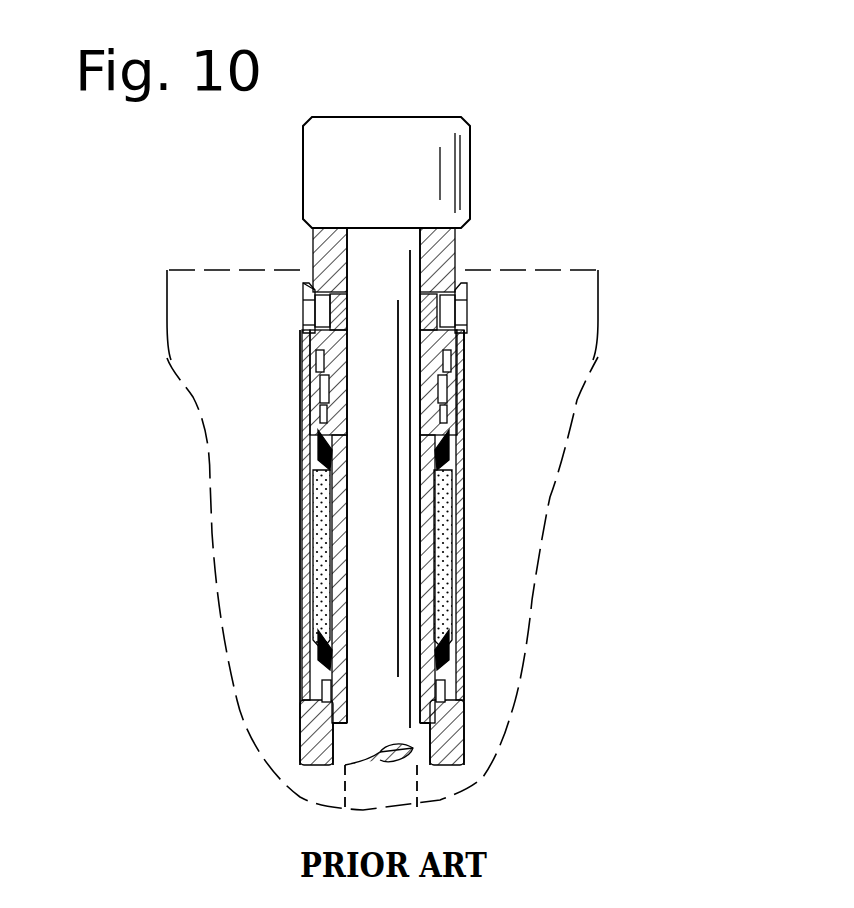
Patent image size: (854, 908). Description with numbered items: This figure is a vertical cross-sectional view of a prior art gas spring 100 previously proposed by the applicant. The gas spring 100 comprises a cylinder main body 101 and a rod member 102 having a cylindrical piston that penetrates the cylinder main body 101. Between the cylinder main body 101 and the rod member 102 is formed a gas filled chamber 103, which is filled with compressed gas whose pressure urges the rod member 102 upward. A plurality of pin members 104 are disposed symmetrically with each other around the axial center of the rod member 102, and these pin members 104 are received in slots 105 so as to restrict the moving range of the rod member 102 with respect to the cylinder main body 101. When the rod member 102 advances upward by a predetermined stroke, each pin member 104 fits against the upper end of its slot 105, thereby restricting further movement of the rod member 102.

The gas spring 100 is at (530, 187).
The cylinder main body 101 is at (453, 703).
The rod member 102 is at (455, 250).
The gas filled chamber 103 is at (453, 557).
The pin member 104 is at (303, 307).
The slot 105 is at (302, 360).